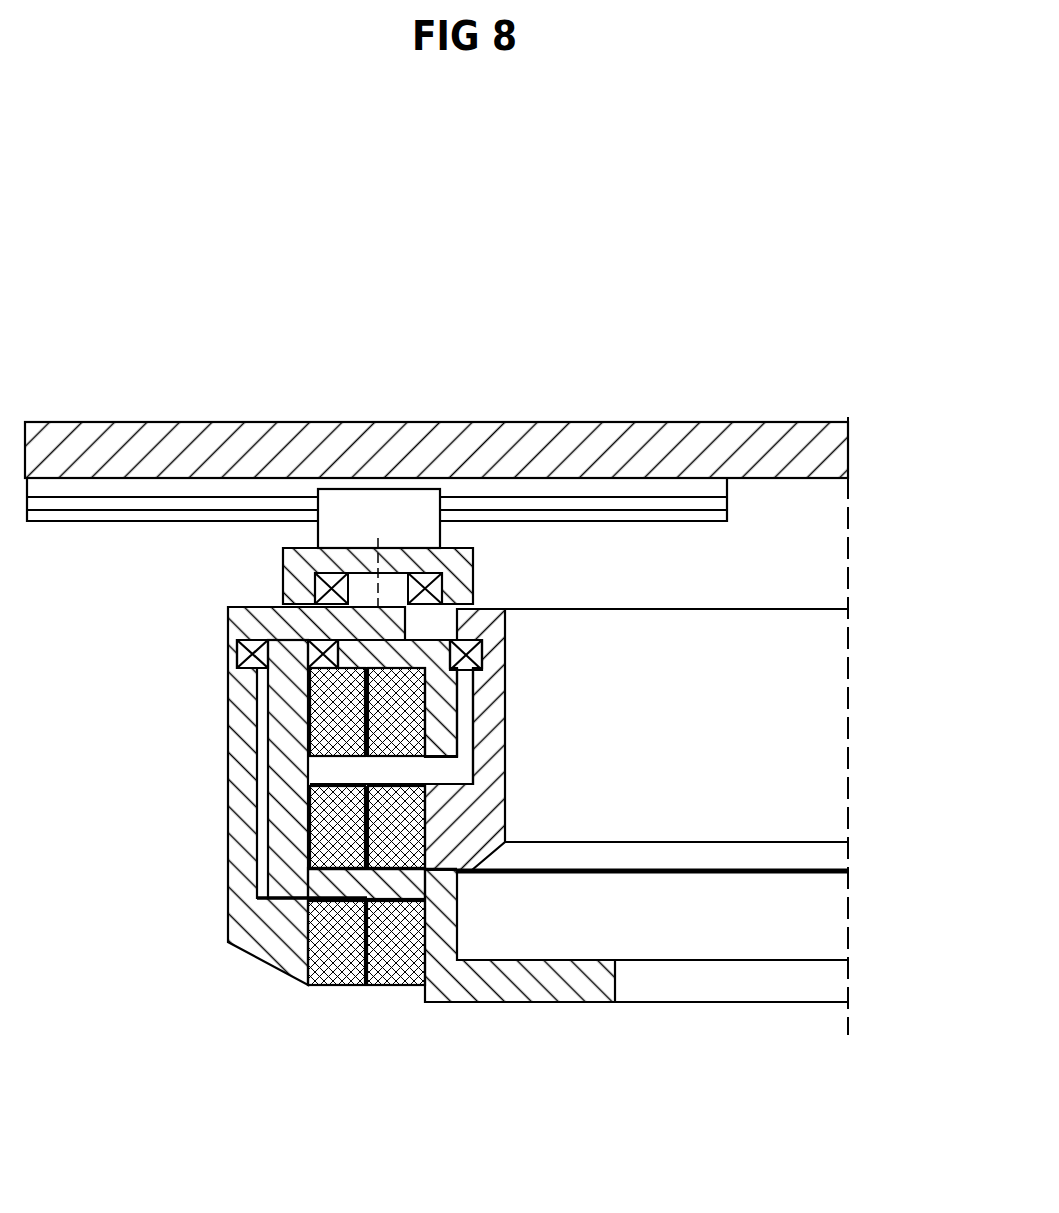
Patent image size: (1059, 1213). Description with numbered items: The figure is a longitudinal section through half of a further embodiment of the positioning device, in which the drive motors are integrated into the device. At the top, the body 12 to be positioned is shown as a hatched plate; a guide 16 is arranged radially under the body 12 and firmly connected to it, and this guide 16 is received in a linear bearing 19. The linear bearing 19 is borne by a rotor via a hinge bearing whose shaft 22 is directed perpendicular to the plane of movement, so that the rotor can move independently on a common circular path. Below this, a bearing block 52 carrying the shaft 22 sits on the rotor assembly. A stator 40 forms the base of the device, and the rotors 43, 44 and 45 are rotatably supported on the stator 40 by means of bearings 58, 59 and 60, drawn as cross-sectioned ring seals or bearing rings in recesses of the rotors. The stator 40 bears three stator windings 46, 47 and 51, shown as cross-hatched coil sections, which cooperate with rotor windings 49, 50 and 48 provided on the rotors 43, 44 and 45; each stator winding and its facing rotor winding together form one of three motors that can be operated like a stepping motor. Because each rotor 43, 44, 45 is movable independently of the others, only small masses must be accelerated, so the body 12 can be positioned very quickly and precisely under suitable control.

The body 12 is at (102, 442).
The guide 16 is at (278, 490).
The linear bearing 19 is at (377, 503).
The shaft 22 is at (387, 597).
The stator 40 is at (560, 992).
The rotor 43 is at (252, 792).
The rotor 44 is at (490, 695).
The rotor 45 is at (492, 745).
The stator winding 46 is at (335, 720).
The stator winding 47 is at (312, 840).
The rotor winding 48 is at (345, 986).
The rotor winding 49 is at (400, 767).
The rotor winding 50 is at (395, 812).
The stator winding 51 is at (410, 986).
The bearing block 52 is at (283, 572).
The bearing 58 is at (473, 653).
The bearing 59 is at (300, 666).
The bearing 60 is at (247, 655).